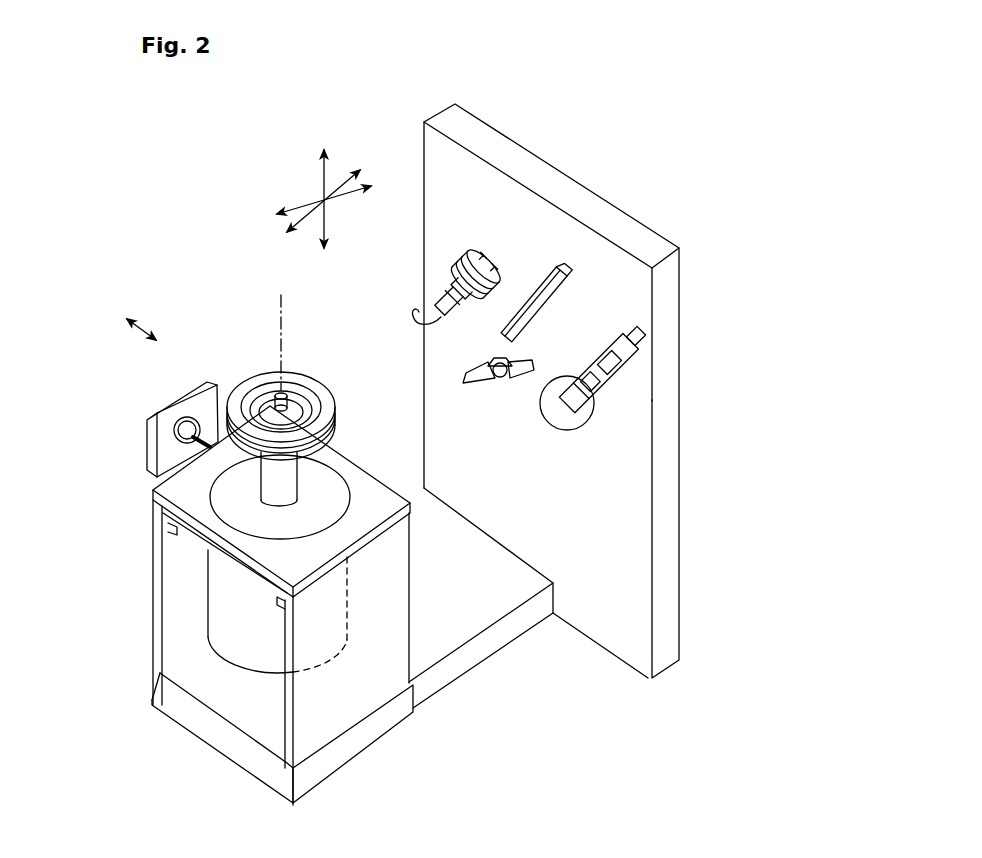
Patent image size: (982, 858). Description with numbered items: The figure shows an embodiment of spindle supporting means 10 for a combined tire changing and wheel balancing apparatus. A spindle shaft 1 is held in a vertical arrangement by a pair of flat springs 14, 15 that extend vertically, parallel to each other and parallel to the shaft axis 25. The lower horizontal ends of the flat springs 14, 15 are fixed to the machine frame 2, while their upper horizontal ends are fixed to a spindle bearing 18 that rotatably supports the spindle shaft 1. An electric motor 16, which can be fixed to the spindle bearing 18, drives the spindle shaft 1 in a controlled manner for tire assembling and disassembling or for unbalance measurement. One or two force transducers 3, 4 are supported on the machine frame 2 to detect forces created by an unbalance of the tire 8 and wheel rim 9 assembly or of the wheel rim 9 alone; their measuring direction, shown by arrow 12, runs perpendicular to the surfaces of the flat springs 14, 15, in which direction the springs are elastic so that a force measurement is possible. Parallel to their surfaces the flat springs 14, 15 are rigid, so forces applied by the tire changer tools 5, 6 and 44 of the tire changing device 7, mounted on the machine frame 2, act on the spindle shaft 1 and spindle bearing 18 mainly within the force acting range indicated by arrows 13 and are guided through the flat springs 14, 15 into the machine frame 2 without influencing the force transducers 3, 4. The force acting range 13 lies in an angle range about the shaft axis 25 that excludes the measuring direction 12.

The spindle shaft 1 is at (280, 482).
The machine frame 2 is at (544, 183).
The force transducer 3 is at (172, 422).
The force transducer 4 is at (187, 430).
The tire changer tool 5 is at (443, 327).
The tire changer tool 6 is at (497, 380).
The tire changing device 7 is at (698, 381).
The tire 8 is at (310, 389).
The wheel rim 9 is at (317, 393).
The spindle supporting means 10 is at (242, 615).
The measuring direction 12 is at (157, 340).
The force acting range 13 is at (324, 200).
The flat spring 14 is at (330, 708).
The flat spring 15 is at (180, 572).
The electric motor 16 is at (247, 647).
The spindle bearing 18 is at (247, 577).
The shaft axis 25 is at (280, 347).
The tire changer tool 44 is at (558, 423).